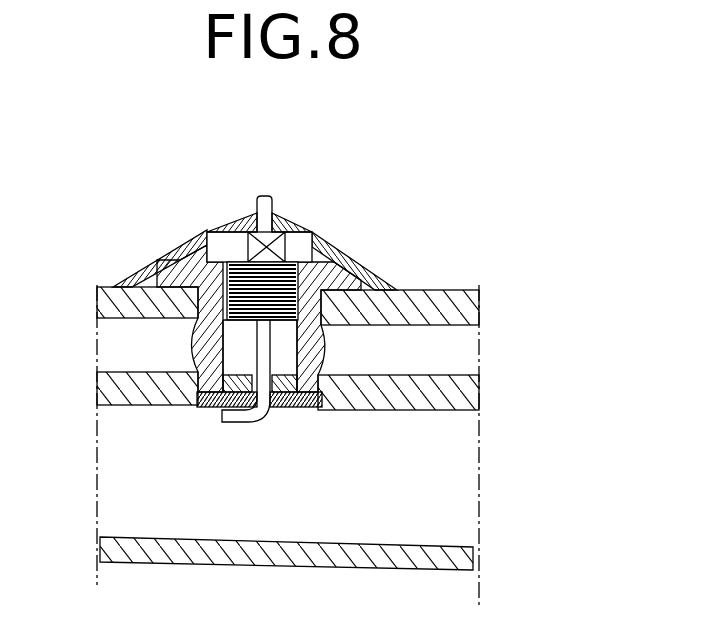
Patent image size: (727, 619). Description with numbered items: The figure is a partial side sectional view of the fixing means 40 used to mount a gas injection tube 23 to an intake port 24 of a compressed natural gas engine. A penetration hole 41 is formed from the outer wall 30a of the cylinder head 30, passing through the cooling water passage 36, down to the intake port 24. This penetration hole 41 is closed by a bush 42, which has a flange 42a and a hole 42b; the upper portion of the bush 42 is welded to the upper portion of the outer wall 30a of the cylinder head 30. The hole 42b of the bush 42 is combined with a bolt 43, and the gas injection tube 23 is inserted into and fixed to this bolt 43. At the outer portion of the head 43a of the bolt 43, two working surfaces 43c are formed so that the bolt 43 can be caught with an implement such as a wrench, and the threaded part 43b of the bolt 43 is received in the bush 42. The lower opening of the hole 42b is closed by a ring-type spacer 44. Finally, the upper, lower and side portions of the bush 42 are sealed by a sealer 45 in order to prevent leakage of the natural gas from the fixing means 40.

The gas injection tube 23 is at (286, 222).
The intake port 24 is at (193, 514).
The cylinder head 30 is at (326, 309).
The outer wall 30a is at (482, 310).
The cooling water passage 36 is at (465, 358).
The fixing means 40 is at (434, 210).
The penetration hole 41 is at (208, 410).
The bush 42 is at (268, 297).
The flange 42a is at (172, 275).
The hole 42b is at (320, 251).
The bolt 43 is at (205, 220).
The head 43a is at (212, 233).
The threaded portion 43b is at (206, 250).
The working surfaces 43c is at (256, 228).
The ring-type spacer 44 is at (310, 410).
The sealer 45 is at (133, 282).